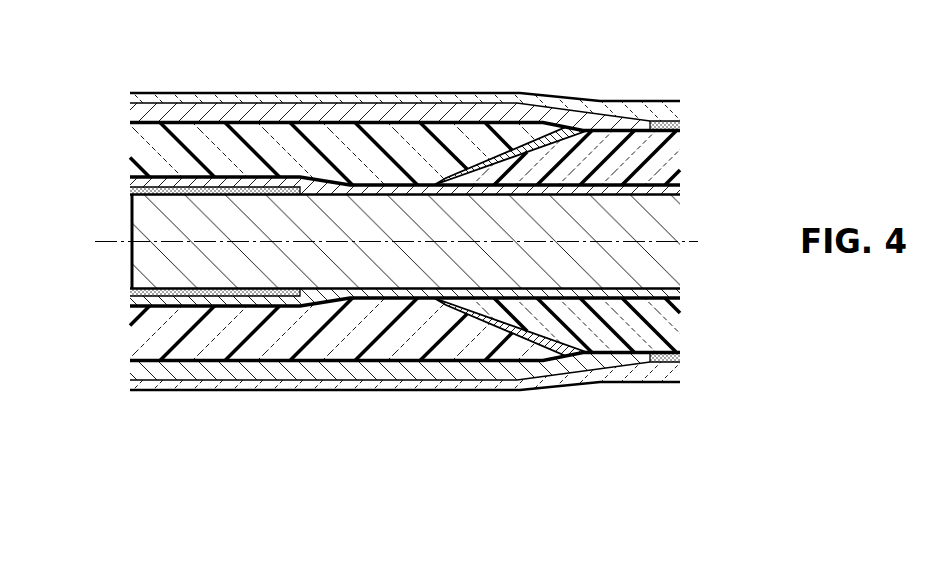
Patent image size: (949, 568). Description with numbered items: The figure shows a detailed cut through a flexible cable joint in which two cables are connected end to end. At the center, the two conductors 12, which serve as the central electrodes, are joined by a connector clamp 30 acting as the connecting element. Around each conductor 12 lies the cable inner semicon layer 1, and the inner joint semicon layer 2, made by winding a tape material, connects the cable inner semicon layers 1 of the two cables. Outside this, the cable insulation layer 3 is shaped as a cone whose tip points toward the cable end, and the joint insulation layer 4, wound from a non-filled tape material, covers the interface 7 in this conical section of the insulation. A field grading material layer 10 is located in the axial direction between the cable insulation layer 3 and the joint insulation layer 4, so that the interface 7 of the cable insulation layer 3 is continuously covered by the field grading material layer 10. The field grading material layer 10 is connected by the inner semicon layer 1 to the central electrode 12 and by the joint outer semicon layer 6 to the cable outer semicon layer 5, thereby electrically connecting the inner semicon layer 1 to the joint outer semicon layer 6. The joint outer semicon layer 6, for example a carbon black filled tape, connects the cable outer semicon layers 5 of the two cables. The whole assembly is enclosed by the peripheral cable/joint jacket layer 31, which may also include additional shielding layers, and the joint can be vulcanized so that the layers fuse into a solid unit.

The cable inner semicon layer 1 is at (492, 187).
The inner joint semicon layer 2 is at (373, 189).
The cable insulation layer 3 is at (593, 157).
The joint insulation layer 4 is at (275, 150).
The cable outer semicon layer 5 is at (665, 126).
The joint outer semicon layer 6 is at (175, 112).
The interface 7 is at (524, 318).
The field grading material layer 10 is at (489, 317).
The conductor 12 is at (309, 260).
The connector clamp 30 is at (200, 292).
The cable/joint jacket layer 31 is at (633, 372).